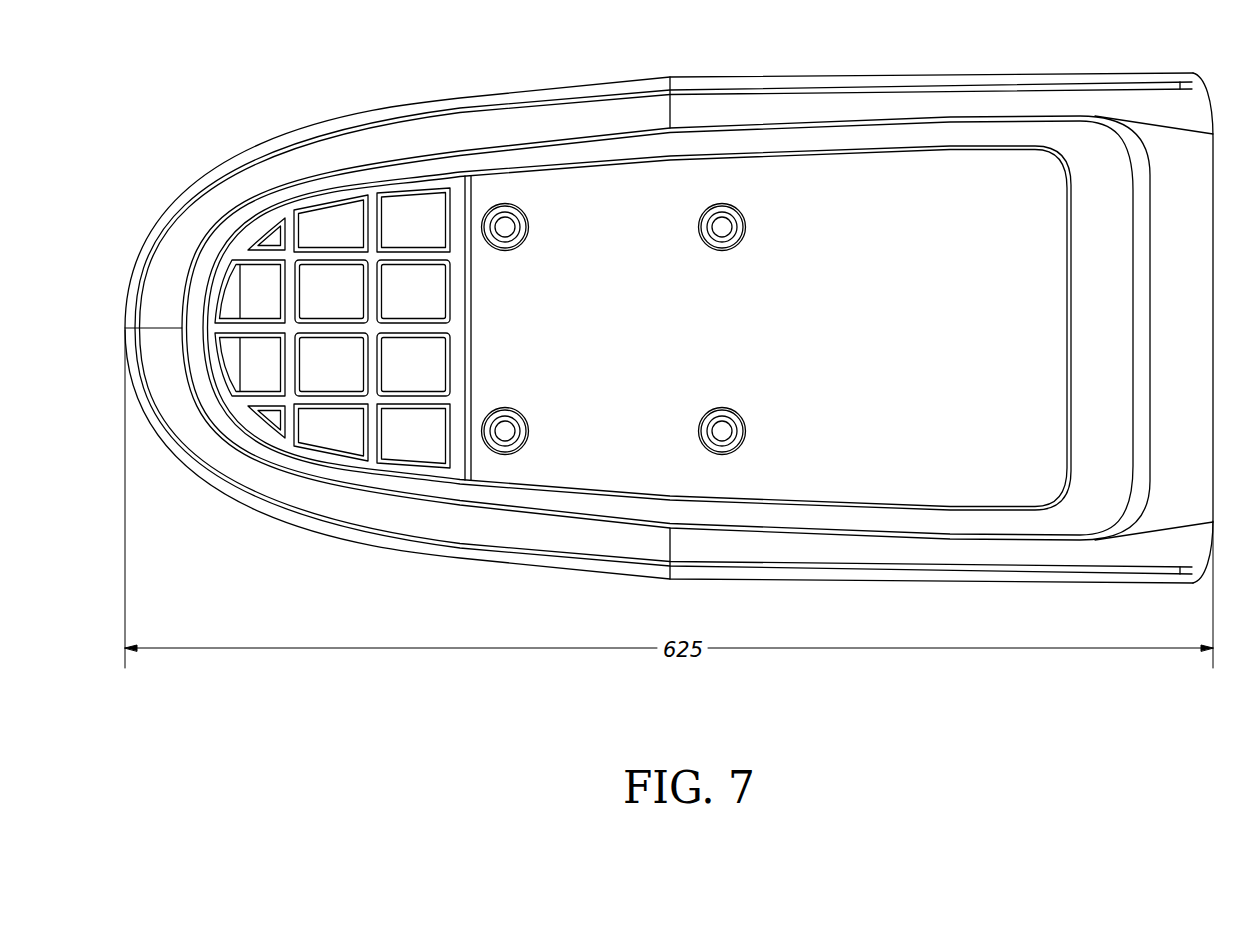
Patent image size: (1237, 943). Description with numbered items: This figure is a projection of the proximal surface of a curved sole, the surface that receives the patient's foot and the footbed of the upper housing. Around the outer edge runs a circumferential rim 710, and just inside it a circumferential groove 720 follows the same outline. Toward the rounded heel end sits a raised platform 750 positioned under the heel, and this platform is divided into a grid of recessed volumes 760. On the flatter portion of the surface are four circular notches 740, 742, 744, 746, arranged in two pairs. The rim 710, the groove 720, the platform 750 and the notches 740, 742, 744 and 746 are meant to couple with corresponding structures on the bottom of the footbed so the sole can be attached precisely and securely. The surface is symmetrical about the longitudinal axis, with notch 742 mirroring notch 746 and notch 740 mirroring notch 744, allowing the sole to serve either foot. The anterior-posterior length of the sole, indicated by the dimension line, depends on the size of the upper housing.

The circumferential rim 710 is at (1100, 75).
The circumferential groove 720 is at (1122, 294).
The circular notch 740 is at (536, 250).
The circular notch 742 is at (751, 250).
The circular notch 744 is at (541, 451).
The circular notch 746 is at (756, 451).
The raised platform 750 is at (458, 352).
The recessed volumes 760 is at (432, 302).